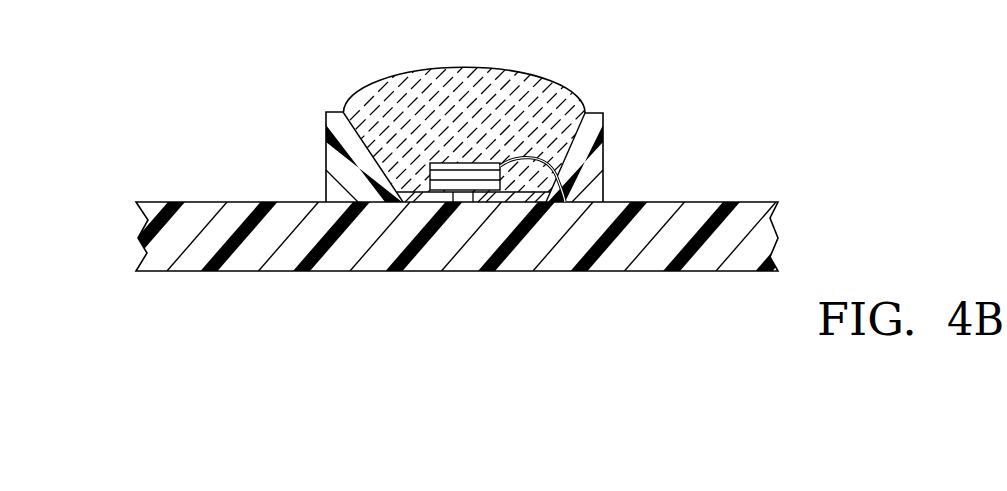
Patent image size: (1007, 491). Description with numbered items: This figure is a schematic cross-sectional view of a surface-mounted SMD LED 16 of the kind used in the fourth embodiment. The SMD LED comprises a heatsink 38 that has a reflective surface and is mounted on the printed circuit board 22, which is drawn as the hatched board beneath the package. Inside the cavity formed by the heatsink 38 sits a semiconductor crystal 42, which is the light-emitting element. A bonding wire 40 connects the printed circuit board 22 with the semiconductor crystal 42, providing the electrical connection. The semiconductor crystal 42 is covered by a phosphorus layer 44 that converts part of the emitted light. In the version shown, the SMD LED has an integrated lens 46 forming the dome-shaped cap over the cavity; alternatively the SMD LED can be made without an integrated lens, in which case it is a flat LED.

The light source (LED package) 16 is at (787, 12).
The printed circuit board 22 is at (286, 254).
The heatsink 38 is at (600, 148).
The bonding wire 40 is at (556, 156).
The semiconductor crystal 42 is at (502, 163).
The phosphorus layer 44 is at (443, 163).
The integrated lens 46 is at (372, 122).